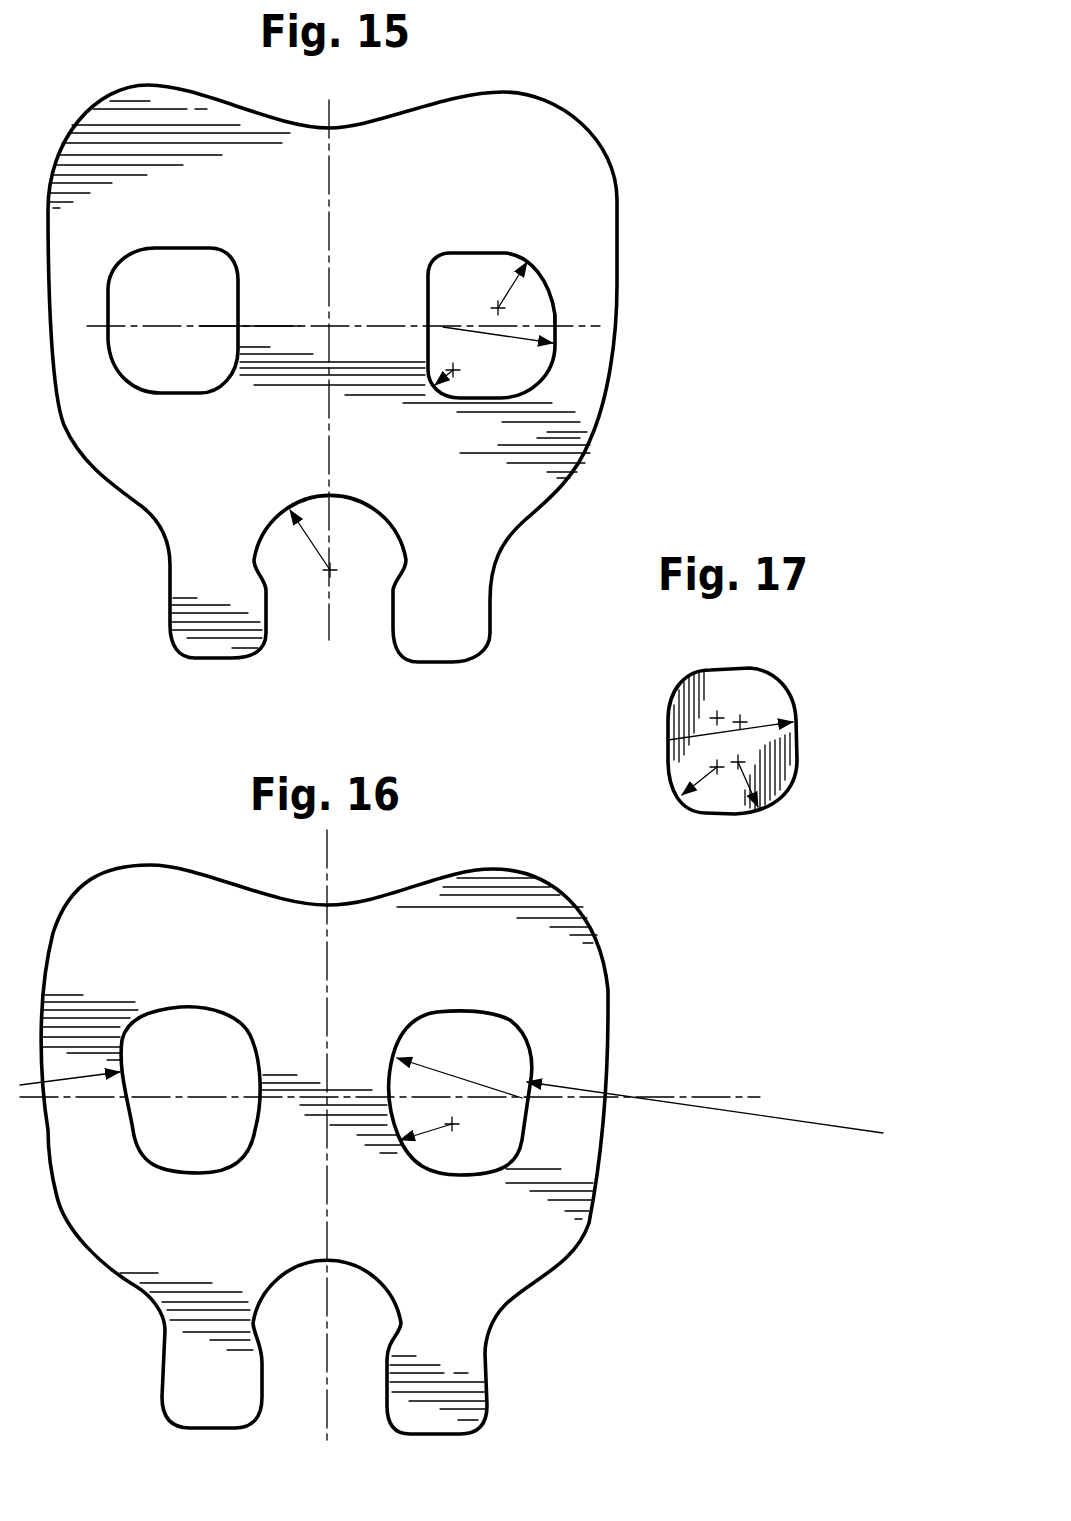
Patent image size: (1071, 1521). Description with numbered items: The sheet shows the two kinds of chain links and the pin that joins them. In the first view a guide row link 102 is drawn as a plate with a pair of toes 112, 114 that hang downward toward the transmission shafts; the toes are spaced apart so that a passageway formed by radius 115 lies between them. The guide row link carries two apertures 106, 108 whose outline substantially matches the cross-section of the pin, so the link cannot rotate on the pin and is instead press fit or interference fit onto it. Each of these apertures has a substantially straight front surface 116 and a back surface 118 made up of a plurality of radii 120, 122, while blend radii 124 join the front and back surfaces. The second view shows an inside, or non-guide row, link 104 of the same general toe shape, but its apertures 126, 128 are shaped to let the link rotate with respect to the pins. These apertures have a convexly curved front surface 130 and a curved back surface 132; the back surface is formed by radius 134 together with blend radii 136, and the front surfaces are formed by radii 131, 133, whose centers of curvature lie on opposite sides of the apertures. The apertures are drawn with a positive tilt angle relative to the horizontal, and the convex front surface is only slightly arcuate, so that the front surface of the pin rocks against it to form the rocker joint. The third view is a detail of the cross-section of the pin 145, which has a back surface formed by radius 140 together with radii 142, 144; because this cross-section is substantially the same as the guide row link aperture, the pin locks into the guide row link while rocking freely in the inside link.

In FIG. 15, the link 102 is at (583, 162).
In FIG. 15, the aperture 106 is at (192, 245).
In FIG. 15, the aperture 108 is at (498, 250).
In FIG. 15, the toe 112 is at (225, 630).
In FIG. 15, the toe 114 is at (458, 627).
In FIG. 15, the radius 115 is at (308, 548).
In FIG. 15, the front surface 116 is at (238, 312).
In FIG. 15, the back surface 118 is at (557, 317).
In FIG. 15, the radius 120 is at (522, 329).
In FIG. 15, the radius 122 is at (513, 292).
In FIG. 15, the blend radius 124 is at (455, 372).
In FIG. 16, the link 104 is at (593, 922).
In FIG. 16, the aperture 126 is at (175, 1005).
In FIG. 16, the aperture 128 is at (485, 1010).
In FIG. 16, the front surface 130 is at (128, 1128).
In FIG. 16, the radius 131 is at (82, 1078).
In FIG. 16, the back surface 132 is at (253, 1037).
In FIG. 16, the radius 133 is at (580, 1086).
In FIG. 16, the radius 134 is at (447, 1075).
In FIG. 16, the blend radius 136 is at (432, 1132).
In FIG. 17, the radius 140 is at (697, 735).
In FIG. 17, the radius 142 is at (748, 778).
In FIG. 17, the radius 144 is at (705, 785).
In FIG. 17, the pin 145 is at (808, 620).